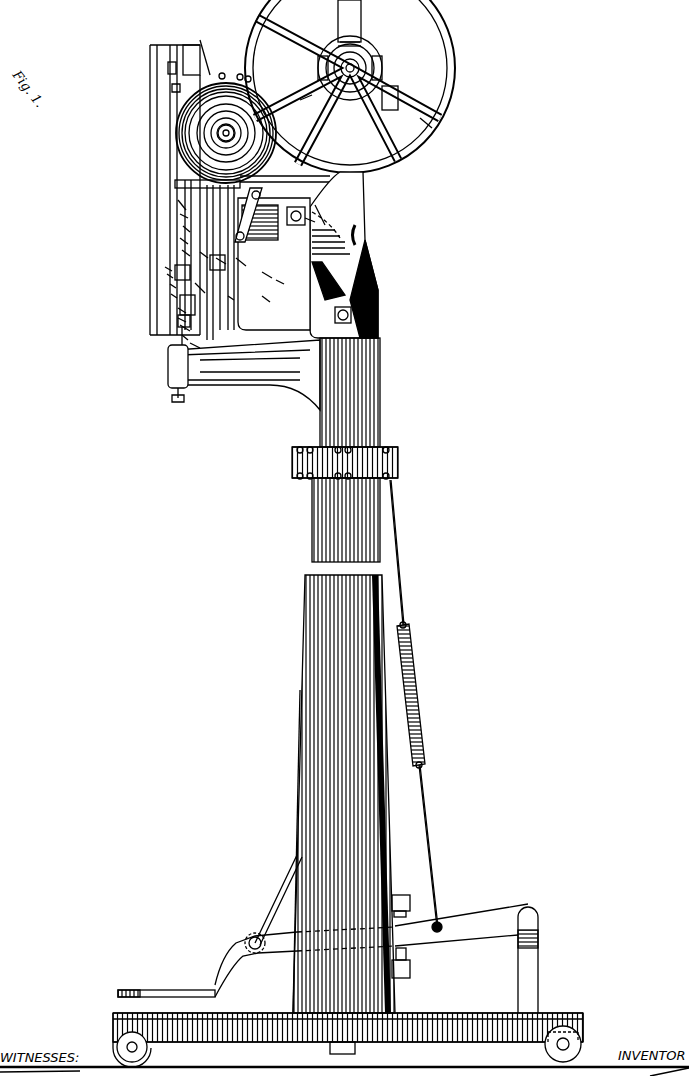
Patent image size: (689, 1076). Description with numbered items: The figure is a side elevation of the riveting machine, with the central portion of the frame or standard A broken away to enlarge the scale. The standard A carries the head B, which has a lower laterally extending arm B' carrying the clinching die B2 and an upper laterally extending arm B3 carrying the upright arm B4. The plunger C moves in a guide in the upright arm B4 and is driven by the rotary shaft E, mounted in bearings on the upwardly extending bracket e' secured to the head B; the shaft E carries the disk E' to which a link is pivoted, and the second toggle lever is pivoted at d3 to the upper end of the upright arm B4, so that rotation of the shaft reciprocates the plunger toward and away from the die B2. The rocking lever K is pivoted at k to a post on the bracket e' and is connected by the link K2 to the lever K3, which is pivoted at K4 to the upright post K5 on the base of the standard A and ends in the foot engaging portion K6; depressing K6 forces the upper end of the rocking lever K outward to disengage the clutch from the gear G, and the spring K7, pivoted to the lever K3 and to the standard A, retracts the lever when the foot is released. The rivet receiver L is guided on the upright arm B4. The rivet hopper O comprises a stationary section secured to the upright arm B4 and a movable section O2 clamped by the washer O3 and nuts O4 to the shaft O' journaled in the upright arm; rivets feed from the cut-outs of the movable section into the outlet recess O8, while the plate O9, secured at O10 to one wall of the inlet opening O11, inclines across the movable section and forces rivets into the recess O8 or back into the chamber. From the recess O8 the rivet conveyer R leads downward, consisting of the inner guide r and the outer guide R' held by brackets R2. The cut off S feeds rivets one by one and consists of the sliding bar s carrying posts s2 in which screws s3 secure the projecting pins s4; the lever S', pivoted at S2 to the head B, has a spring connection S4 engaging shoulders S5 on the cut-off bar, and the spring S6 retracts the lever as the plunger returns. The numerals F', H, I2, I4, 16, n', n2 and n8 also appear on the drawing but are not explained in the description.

The frame or standard A is at (312, 592).
The head B is at (346, 450).
The laterally extending arm B' is at (244, 210).
The clinching die B2 is at (198, 345).
The upper laterally extending arm B3 is at (241, 262).
The upright arm B4 is at (189, 46).
The plunger C is at (185, 229).
The rotary shaft E is at (368, 29).
The disk E' is at (360, 30).
The crank F' is at (299, 104).
The gear G is at (447, 112).
The lever H is at (206, 255).
The rocking lever K is at (398, 97).
The pivot k is at (425, 125).
The link K2 is at (366, 235).
The lever K3 is at (237, 938).
The pivot K4 is at (533, 912).
The upright post K5 is at (530, 968).
The foot engaging portion K6 is at (143, 990).
The spring K7 is at (416, 662).
The rivet receiver L is at (180, 320).
The rivet hopper O is at (207, 110).
The shaft O' is at (204, 137).
The movable hopper section O2 is at (215, 140).
The washer O3 is at (320, 100).
The nuts O4 is at (160, 103).
The outlet guide or recess O8 is at (195, 130).
The plate O9 is at (222, 72).
The securing point O10 is at (250, 79).
The inlet opening O11 is at (241, 73).
The rivet conveyer R is at (160, 261).
The outer guide R' is at (147, 248).
The brackets R2 is at (180, 205).
The inner guide r is at (182, 216).
The cut off S is at (274, 264).
The bar or lever S' is at (277, 269).
The pivot S2 is at (218, 262).
The spring connection S4 is at (265, 300).
The shoulders S5 is at (281, 283).
The spring S6 is at (340, 178).
The sliding bar s is at (169, 276).
The posts s2 is at (172, 286).
The screws s3 is at (173, 296).
The projecting pins s4 is at (167, 269).
The needle guide I2 is at (188, 318).
The needle guide I4 is at (180, 311).
The needle 16 is at (185, 337).
The pivot d3 is at (168, 68).
The bracket e' is at (351, 255).
The lever n' is at (262, 213).
The pin n2 is at (312, 220).
The link n8 is at (322, 226).